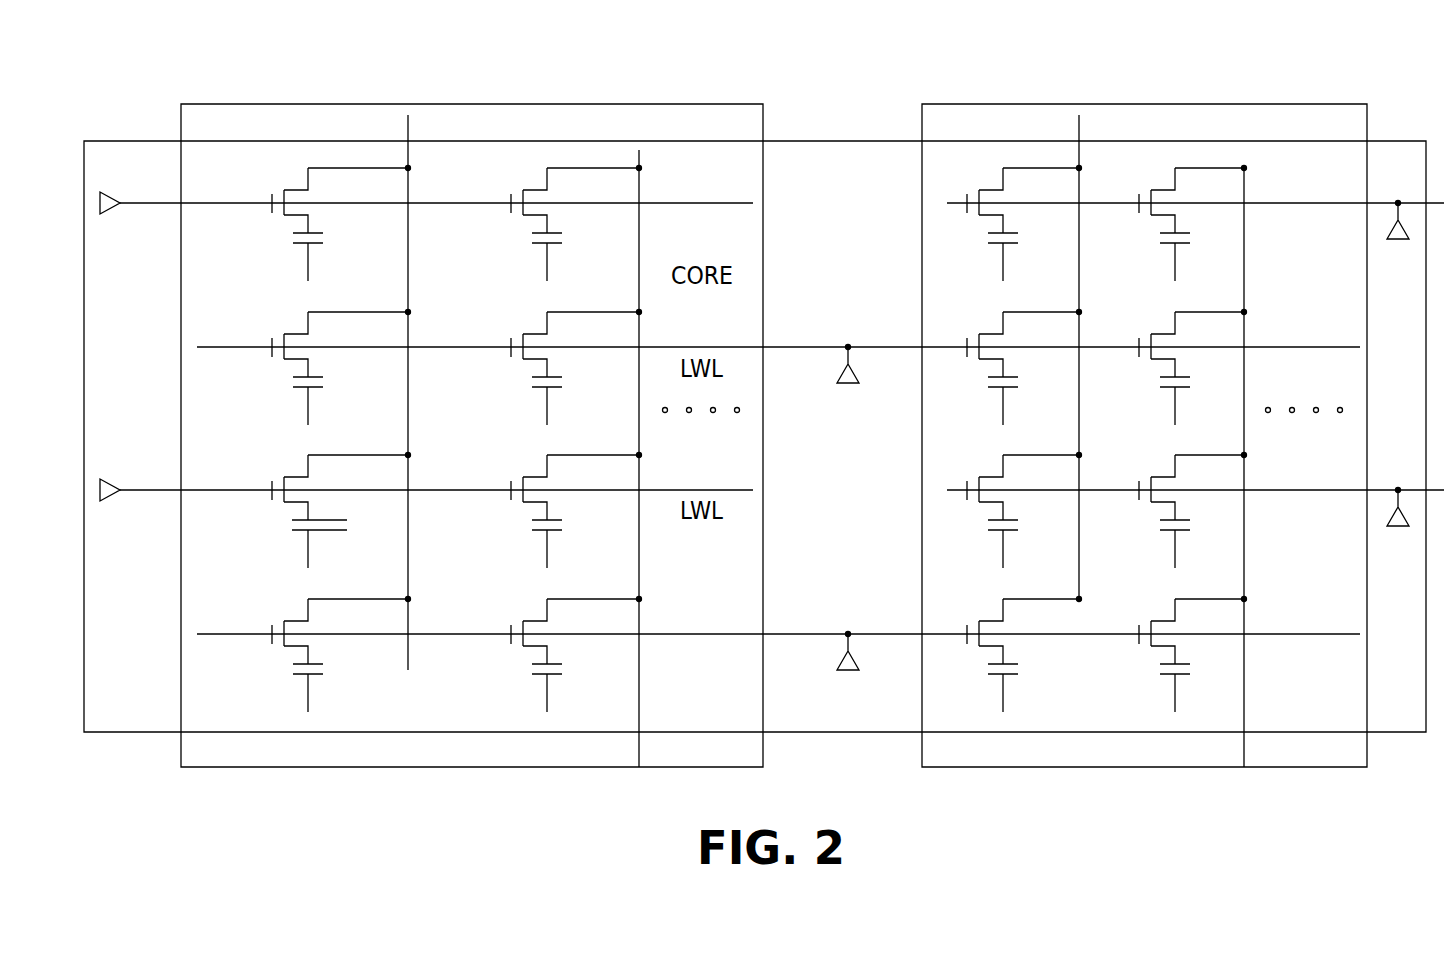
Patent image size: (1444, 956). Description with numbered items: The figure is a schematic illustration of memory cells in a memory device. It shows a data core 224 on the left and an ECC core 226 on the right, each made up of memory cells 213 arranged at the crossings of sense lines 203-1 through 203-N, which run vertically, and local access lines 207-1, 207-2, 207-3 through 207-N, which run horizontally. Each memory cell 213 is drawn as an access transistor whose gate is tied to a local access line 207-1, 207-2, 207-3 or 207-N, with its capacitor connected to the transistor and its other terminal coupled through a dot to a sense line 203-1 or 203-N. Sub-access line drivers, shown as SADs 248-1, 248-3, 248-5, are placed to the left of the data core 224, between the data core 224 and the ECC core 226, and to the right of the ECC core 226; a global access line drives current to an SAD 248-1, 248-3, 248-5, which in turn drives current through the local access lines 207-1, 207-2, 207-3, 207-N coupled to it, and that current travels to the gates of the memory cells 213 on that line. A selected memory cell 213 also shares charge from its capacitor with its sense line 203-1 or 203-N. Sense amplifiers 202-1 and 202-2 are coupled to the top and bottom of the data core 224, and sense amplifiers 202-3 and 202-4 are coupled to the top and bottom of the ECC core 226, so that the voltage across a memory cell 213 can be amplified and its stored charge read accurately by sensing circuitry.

The data core 224 is at (296, 55).
The ECC core 226 is at (1073, 55).
The SAD 248-1 is at (137, 140).
The SAD 248-3 is at (846, 140).
The SAD 248-5 is at (1410, 140).
The sense amplifier 202-1 is at (585, 128).
The sense amplifier 202-2 is at (441, 768).
The sense amplifier 202-3 is at (1189, 128).
The sense amplifier 202-4 is at (1154, 768).
The sense line 203-1 is at (407, 167).
The sense line 203-N is at (641, 152).
The local access line 207-1 is at (706, 205).
The local access line 207-2 is at (710, 345).
The local access line 207-3 is at (710, 488).
The local access line 207-N is at (700, 632).
The memory cell 213 is at (272, 233).